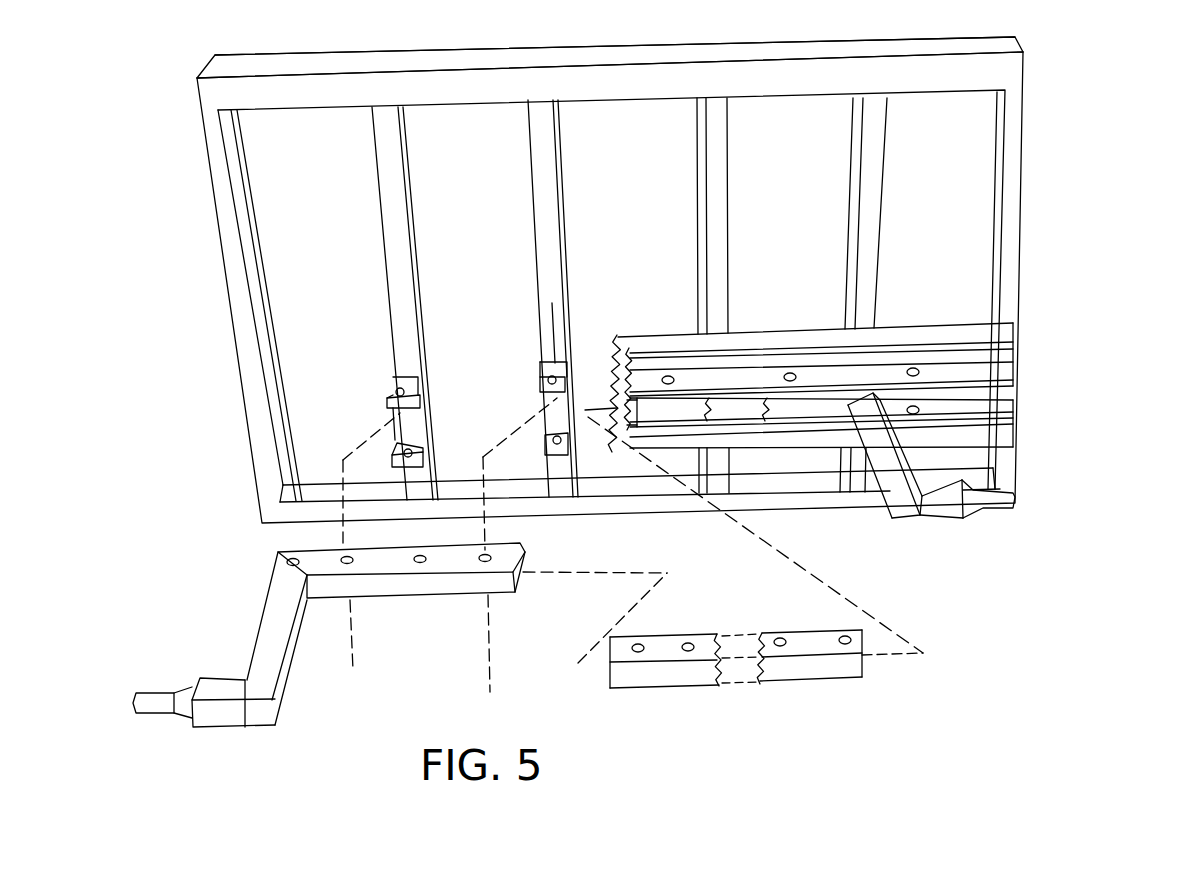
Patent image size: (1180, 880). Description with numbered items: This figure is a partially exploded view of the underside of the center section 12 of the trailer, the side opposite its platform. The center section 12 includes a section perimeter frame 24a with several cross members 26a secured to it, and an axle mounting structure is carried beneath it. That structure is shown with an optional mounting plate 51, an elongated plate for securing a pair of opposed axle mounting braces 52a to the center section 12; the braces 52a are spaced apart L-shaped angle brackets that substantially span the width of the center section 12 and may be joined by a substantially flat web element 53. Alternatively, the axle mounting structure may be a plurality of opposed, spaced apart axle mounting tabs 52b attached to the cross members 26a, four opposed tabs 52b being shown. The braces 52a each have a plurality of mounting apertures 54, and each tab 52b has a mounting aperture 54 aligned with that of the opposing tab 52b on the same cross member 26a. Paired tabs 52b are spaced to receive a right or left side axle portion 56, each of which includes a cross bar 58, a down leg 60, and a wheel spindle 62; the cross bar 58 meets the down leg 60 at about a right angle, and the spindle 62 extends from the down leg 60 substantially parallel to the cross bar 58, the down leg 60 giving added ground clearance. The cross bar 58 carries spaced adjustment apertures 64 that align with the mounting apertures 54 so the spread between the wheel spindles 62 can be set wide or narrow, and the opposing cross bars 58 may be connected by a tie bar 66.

The center section 12 is at (1058, 163).
The section perimeter frame 24a is at (1010, 70).
The cross member 26a is at (397, 200).
The mounting plate 51 is at (1000, 327).
The axle mounting brace 52a is at (1003, 360).
The axle mounting tab 52b is at (417, 377).
The web element 53 is at (740, 407).
The mounting aperture 54 is at (407, 395).
The axle portion 56 is at (245, 613).
The cross bar 58 is at (525, 590).
The down leg 60 is at (888, 460).
The wheel spindle 62 is at (945, 508).
The adjustment aperture 64 is at (285, 560).
The tie bar 66 is at (853, 672).